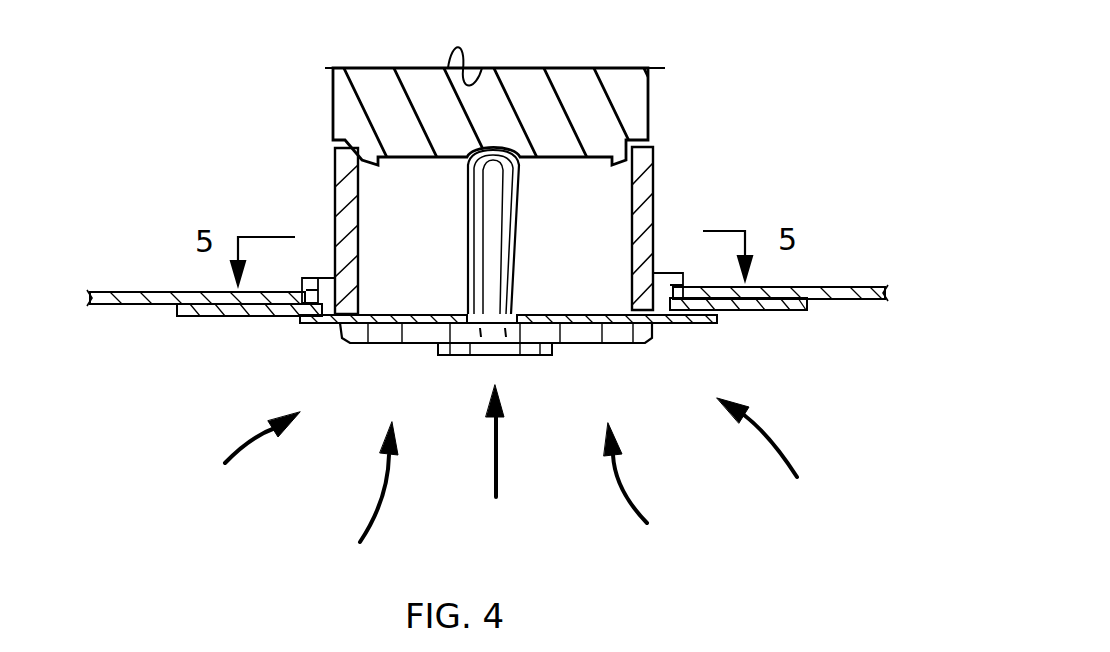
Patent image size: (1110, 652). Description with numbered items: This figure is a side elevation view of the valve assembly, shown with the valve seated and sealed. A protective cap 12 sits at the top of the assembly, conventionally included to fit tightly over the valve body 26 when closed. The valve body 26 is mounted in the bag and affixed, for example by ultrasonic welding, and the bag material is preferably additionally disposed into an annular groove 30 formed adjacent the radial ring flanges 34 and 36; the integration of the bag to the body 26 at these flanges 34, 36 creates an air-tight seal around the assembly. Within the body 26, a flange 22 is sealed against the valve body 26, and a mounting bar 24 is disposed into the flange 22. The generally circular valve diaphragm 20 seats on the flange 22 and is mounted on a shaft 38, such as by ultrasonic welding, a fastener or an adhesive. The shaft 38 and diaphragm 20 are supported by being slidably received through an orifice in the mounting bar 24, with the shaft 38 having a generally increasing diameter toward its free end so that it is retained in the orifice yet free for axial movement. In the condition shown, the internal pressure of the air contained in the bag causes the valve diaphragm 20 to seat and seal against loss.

The protective cap 12 is at (651, 97).
The valve diaphragm 20 is at (612, 343).
The flange 22 is at (283, 318).
The mounting bar 24 is at (414, 313).
The valve body 26 is at (655, 173).
The annular groove 30 is at (313, 277).
The radial ring flange 34 is at (180, 318).
The radial ring flange 36 is at (668, 278).
The shaft 38 is at (468, 218).